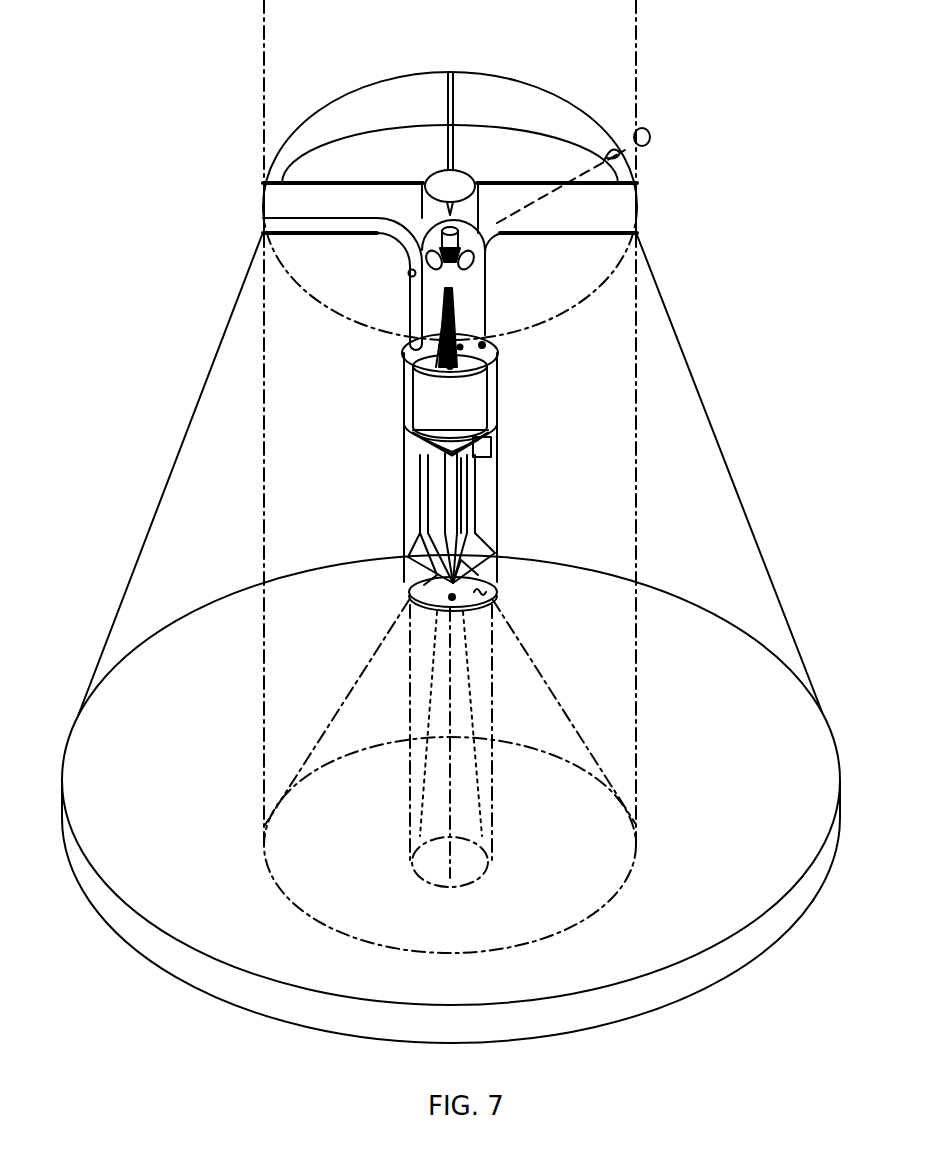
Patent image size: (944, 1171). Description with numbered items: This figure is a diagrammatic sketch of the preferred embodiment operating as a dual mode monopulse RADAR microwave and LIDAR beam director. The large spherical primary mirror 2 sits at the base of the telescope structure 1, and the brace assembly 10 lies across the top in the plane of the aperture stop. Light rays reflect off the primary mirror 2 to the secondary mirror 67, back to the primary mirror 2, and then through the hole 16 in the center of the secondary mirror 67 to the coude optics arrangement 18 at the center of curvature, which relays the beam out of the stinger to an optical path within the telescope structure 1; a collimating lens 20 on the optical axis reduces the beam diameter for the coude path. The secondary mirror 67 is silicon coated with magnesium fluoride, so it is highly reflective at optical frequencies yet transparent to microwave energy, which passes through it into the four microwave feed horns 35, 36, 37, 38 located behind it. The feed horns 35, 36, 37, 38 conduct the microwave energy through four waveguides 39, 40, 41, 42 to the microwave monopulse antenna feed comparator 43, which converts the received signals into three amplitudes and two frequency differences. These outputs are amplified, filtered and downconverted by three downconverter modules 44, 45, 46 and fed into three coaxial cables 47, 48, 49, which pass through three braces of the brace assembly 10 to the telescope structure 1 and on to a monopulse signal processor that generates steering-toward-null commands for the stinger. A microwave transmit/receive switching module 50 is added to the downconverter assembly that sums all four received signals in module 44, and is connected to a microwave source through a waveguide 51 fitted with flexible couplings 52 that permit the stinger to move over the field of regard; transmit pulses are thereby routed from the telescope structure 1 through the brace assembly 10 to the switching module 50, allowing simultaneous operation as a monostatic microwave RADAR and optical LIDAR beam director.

The telescope structure 1 is at (707, 403).
The primary mirror 2 is at (636, 945).
The brace assembly 10 is at (413, 181).
The hole 16 is at (456, 598).
The coude optics arrangement 18 is at (478, 236).
The collimating lens 20 is at (443, 478).
The microwave feed horn 35 is at (461, 571).
The microwave feed horn 36 is at (478, 548).
The microwave feed horn 37 is at (443, 540).
The microwave feed horn 38 is at (427, 557).
The waveguide 39 is at (459, 484).
The waveguide 40 is at (477, 510).
The waveguide 41 is at (437, 452).
The waveguide 42 is at (427, 502).
The microwave monopulse antenna feed comparator 43 is at (490, 443).
The downconverter module 44 is at (477, 413).
The downconverter module 45 is at (499, 378).
The downconverter module 46 is at (462, 346).
The coaxial cable 47 is at (462, 358).
The coaxial cable 48 is at (485, 344).
The coaxial cable 49 is at (460, 307).
The microwave transmit/receive switching module 50 is at (404, 381).
The waveguide 51 is at (410, 313).
The flexible coupling 52 is at (408, 273).
The secondary mirror 67 is at (481, 593).